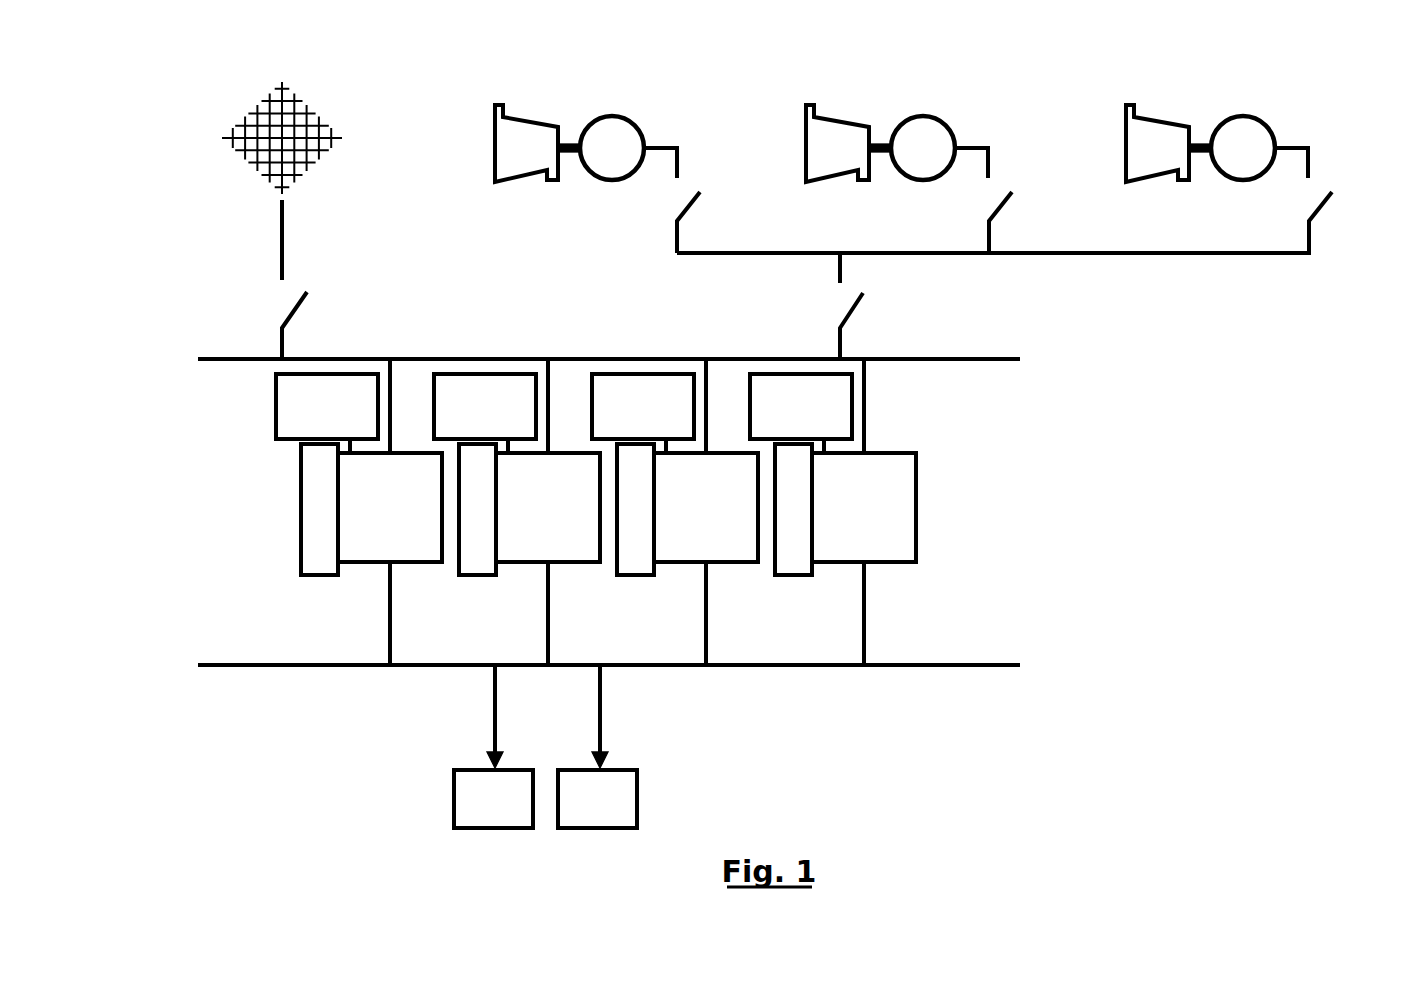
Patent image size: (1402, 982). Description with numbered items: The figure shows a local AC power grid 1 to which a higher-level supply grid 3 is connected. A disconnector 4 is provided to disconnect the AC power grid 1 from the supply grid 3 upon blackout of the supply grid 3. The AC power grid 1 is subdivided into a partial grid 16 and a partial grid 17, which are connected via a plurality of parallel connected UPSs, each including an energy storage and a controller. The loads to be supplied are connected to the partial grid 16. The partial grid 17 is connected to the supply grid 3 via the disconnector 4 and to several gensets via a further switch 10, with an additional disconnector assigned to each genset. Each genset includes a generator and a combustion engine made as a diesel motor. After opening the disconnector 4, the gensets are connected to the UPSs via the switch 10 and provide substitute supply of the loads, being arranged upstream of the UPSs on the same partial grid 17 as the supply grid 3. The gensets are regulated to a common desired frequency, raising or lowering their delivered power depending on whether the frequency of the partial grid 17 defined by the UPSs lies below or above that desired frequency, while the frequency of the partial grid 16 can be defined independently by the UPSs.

The local AC power grid 1 is at (633, 476).
The supply grid 3 is at (236, 125).
The disconnector 4 is at (258, 304).
The switch 10 is at (822, 302).
The partial grid 16 is at (975, 662).
The partial grid 17 is at (558, 357).